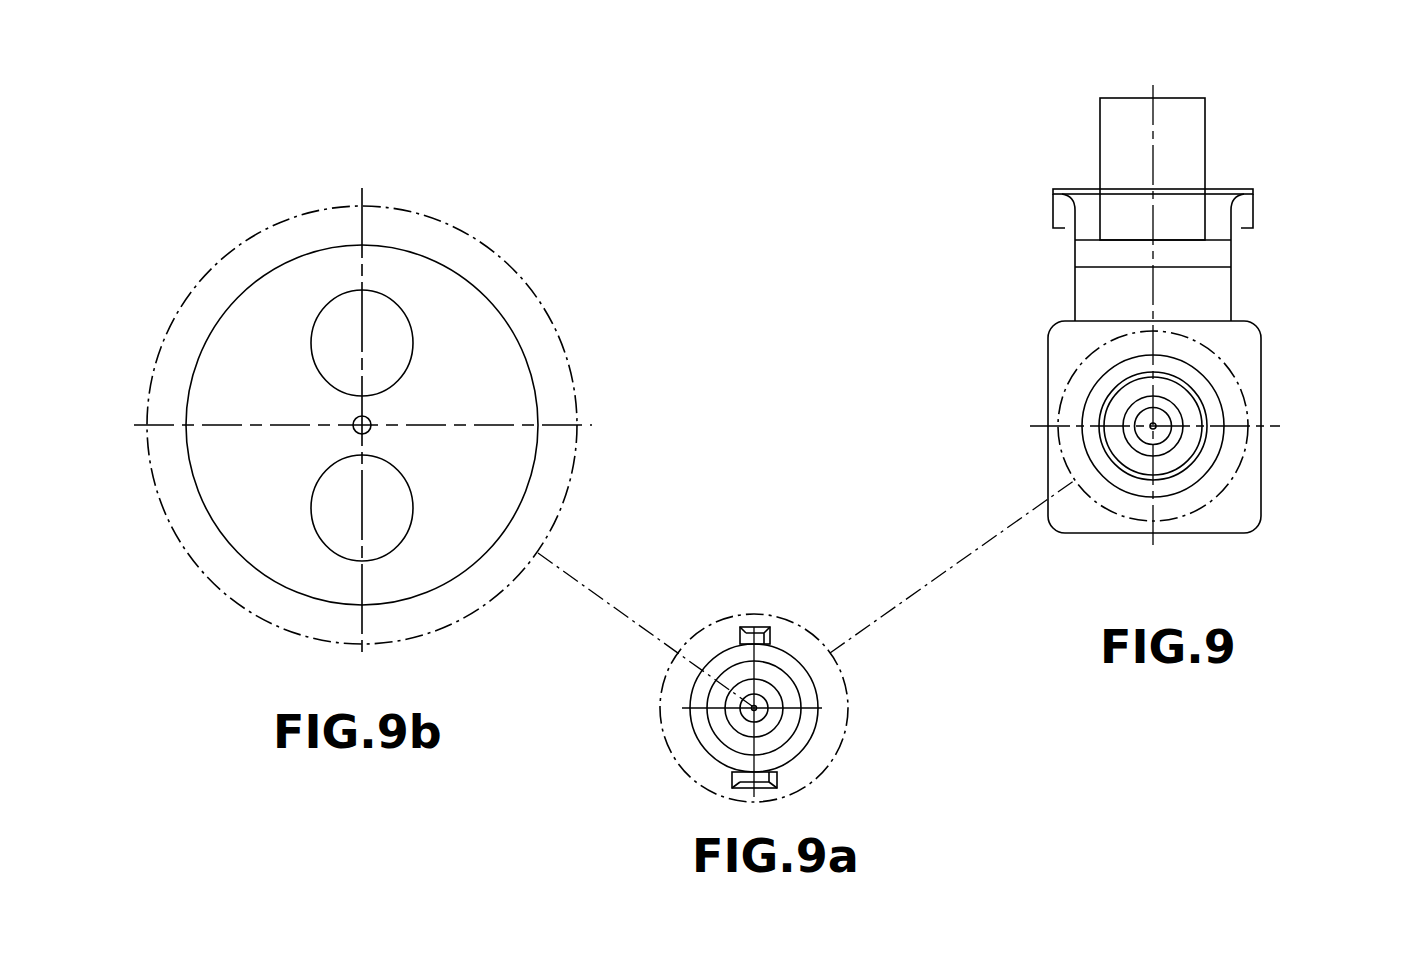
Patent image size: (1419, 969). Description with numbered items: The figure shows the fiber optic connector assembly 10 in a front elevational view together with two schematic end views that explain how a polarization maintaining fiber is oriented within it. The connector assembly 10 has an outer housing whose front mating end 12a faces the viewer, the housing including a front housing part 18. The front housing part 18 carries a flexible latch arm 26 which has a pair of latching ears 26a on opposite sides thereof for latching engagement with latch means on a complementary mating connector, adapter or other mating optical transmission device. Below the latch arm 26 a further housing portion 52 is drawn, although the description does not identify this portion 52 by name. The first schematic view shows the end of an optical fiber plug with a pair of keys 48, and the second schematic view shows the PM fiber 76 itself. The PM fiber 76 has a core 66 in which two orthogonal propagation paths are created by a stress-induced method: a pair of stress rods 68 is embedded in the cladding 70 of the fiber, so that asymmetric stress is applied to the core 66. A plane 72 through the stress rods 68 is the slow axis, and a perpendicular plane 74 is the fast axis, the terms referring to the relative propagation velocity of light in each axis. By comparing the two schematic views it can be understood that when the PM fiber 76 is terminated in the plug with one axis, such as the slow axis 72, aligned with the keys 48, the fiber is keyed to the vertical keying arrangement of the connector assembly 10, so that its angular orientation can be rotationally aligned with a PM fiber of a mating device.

In FIG. 9, the fiber optic connector assembly 10 is at (1052, 168).
In FIG. 9, the front mating end 12a is at (1242, 347).
In FIG. 9, the front housing part 18 is at (1047, 413).
In FIG. 9, the latch arm 26 is at (1173, 112).
In FIG. 9, the latching ears 26a is at (1060, 217).
In FIG. 9A, the keys 48 is at (755, 635).
In FIG. 9, the collar 52 is at (1217, 298).
In FIG. 9B, the core 66 is at (352, 428).
In FIG. 9B, the stress rods 68 is at (417, 495).
In FIG. 9B, the cladding 70 is at (519, 480).
In FIG. 9B, the slow axis 72 is at (363, 263).
In FIG. 9B, the fast axis 74 is at (240, 425).
In FIG. 9B, the PM fiber 76 is at (538, 412).
In FIG. 9, the PM fiber 76 is at (1155, 428).